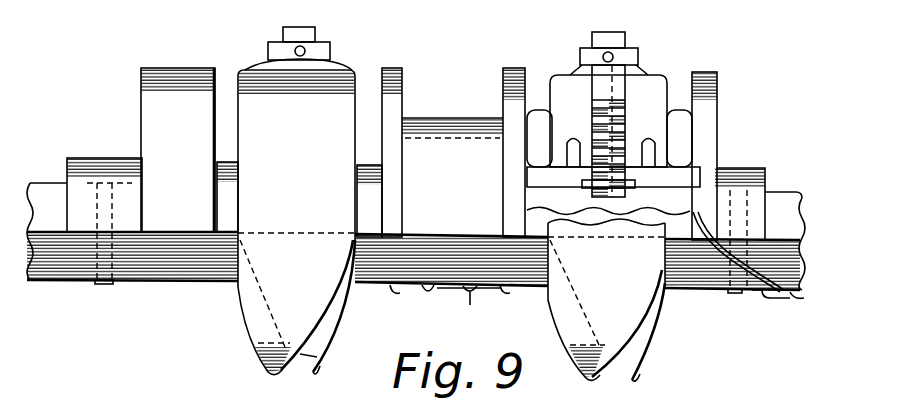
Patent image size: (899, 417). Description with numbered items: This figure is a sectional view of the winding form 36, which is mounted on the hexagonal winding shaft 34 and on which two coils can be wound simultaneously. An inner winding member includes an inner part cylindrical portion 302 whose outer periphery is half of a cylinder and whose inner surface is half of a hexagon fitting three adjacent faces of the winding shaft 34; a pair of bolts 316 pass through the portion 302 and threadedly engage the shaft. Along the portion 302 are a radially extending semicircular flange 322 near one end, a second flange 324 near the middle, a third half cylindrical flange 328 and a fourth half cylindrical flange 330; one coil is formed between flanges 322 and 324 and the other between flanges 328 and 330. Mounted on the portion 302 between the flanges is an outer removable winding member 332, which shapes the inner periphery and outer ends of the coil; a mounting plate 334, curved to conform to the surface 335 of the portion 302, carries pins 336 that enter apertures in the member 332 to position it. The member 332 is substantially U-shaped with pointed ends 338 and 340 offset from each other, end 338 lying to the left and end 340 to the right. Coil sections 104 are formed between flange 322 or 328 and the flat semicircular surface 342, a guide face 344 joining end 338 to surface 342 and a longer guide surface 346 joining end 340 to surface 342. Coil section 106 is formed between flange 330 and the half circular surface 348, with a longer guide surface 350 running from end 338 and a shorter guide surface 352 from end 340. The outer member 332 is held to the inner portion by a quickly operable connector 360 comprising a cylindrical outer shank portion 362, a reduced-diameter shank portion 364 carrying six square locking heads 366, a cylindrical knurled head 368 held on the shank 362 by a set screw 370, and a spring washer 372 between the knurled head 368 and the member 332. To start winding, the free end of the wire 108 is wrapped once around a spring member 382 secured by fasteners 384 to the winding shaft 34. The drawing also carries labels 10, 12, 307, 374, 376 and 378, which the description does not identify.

The vehicle 10 is at (559, 22).
The wheel assembly 12 is at (648, 176).
The winding shaft 34 is at (52, 265).
The winding form 36 is at (198, 42).
The joining coil section 104 is at (533, 110).
The joining coil section 106 is at (700, 82).
The wire 108 is at (762, 278).
The inner part cylindrical portion 302 is at (80, 165).
The base step 307 is at (47, 190).
The bolts 316 is at (110, 180).
The semicircular flange 322 is at (153, 88).
The second flange 324 is at (390, 78).
The third half cylindrical flange 328 is at (503, 72).
The fourth half cylindrical flange 330 is at (715, 72).
The outer removable winding member 332 is at (327, 195).
The mounting plate 334 is at (548, 170).
The outer surface 335 is at (226, 165).
The pins 336 is at (688, 130).
The pointed end 338 is at (268, 374).
The pointed end 340 is at (335, 14).
The flat semicircular surface 342 is at (552, 90).
The guide face 344 is at (248, 330).
The longer guide surface 346 is at (298, 360).
The half circular surface 348 is at (680, 112).
The longer guide surface 350 is at (312, 327).
The shorter guide surface 352 is at (323, 353).
The quickly operable connector 360 is at (620, 26).
The cylindrical outer shank portion 362 is at (636, 78).
The shank portion of reduced diameter 364 is at (592, 147).
The square locking heads 366 is at (597, 127).
The knurled head 368 is at (584, 48).
The set screw 370 is at (618, 52).
The spring washer 372 is at (613, 87).
The wavy seal 374 is at (565, 210).
The lower element 376 is at (668, 409).
The cylinder rim 378 is at (358, 78).
The spring member 382 is at (397, 294).
The fasteners 384 is at (470, 303).